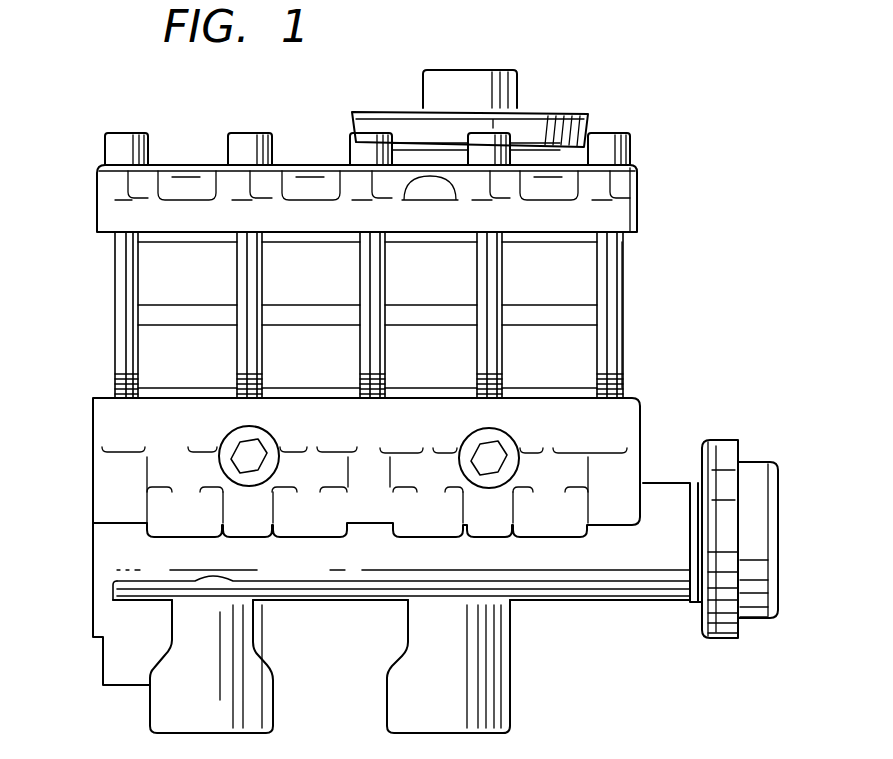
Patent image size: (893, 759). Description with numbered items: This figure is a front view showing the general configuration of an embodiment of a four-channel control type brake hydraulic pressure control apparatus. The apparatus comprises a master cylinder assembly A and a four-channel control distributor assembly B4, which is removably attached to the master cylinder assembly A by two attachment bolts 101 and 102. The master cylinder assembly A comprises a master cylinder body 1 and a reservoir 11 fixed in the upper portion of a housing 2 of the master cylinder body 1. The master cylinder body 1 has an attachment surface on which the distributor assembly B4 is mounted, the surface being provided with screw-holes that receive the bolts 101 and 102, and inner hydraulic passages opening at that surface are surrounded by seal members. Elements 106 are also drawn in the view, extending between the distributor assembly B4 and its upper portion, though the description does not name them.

The master cylinder body 1 is at (739, 651).
The housing 2 is at (638, 577).
The reservoir 11 is at (560, 110).
The attachment bolt 101 is at (255, 448).
The attachment bolt 102 is at (503, 443).
The tie rod 106 is at (118, 297).
The master cylinder assembly A is at (806, 527).
The four-channel control distributor assembly B4 is at (690, 350).